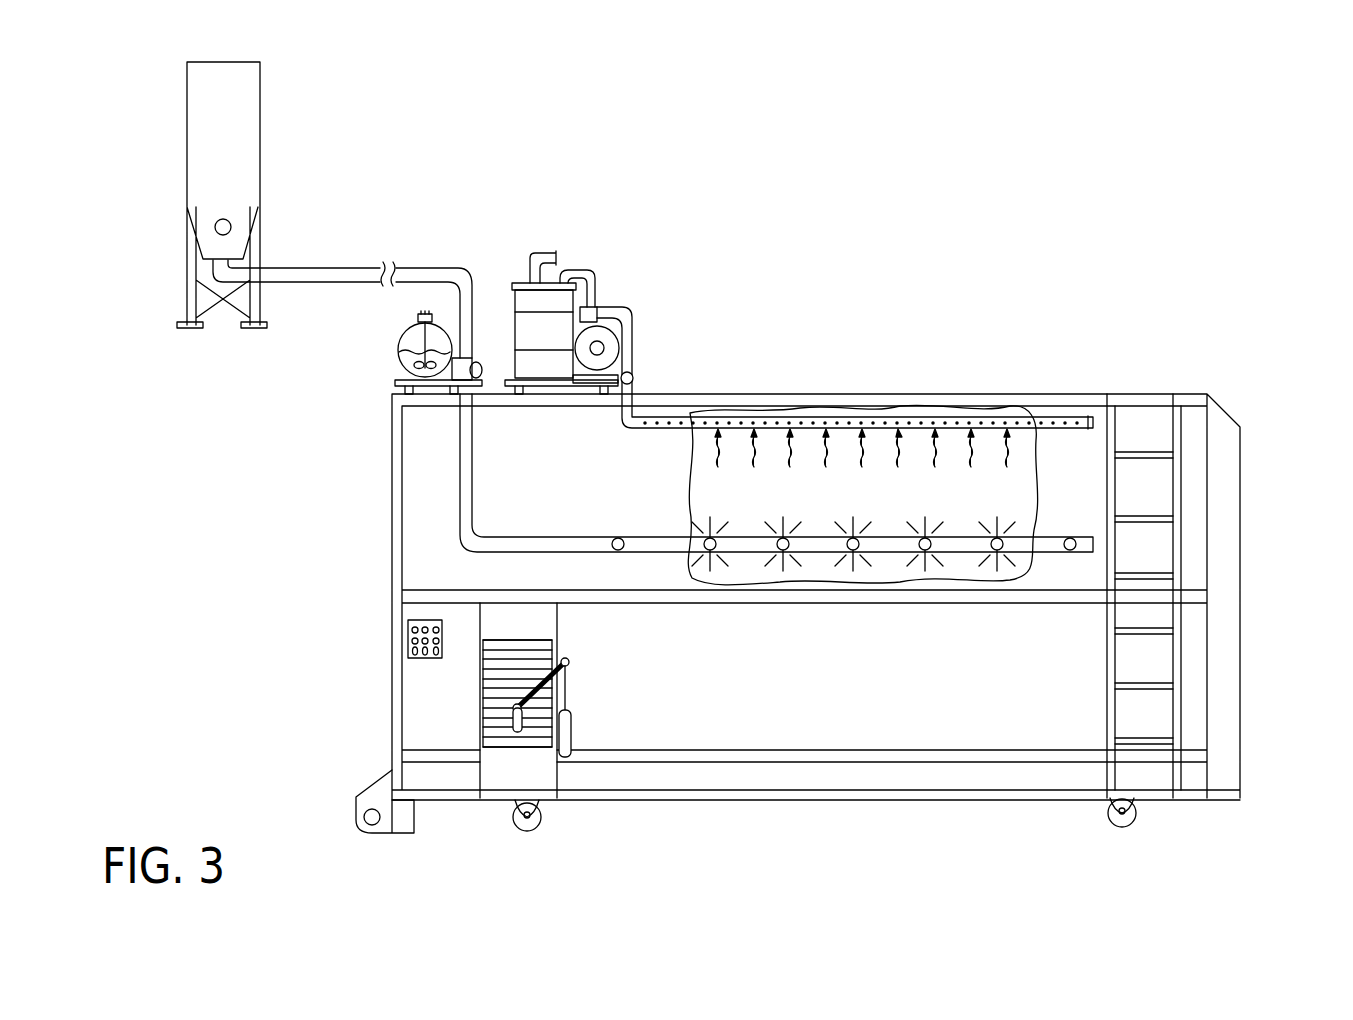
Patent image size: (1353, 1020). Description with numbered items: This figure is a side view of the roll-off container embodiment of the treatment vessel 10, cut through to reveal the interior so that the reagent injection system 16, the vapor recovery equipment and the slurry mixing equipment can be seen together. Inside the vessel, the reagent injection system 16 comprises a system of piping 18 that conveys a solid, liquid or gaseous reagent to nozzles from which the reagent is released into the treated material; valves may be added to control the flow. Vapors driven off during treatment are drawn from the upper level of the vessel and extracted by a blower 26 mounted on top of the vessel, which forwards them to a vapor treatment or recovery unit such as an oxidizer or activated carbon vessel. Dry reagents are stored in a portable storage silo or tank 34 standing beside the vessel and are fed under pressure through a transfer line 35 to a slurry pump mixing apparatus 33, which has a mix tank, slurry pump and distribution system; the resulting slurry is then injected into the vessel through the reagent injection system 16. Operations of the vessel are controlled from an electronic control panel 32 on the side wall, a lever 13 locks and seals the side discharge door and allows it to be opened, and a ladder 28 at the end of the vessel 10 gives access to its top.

The mobile composting/treatment machine frame 10 is at (392, 700).
The access panel with handle 13 is at (573, 693).
The reagent injection system 16 is at (572, 537).
The piping 18 is at (675, 430).
The blower assembly 26 is at (593, 296).
The ladder 28 is at (1225, 527).
The control panel 32 is at (408, 640).
The mixing tank 33 is at (398, 347).
The silo hopper 34 is at (260, 105).
The feed pipe 35 is at (350, 268).